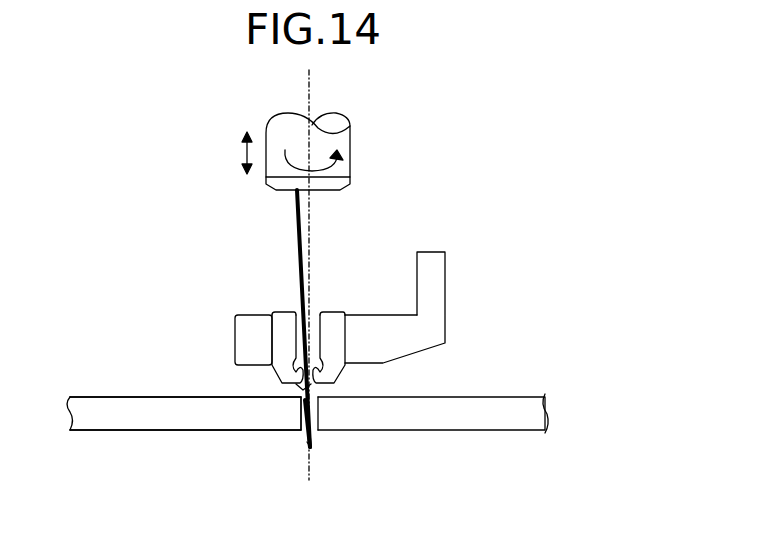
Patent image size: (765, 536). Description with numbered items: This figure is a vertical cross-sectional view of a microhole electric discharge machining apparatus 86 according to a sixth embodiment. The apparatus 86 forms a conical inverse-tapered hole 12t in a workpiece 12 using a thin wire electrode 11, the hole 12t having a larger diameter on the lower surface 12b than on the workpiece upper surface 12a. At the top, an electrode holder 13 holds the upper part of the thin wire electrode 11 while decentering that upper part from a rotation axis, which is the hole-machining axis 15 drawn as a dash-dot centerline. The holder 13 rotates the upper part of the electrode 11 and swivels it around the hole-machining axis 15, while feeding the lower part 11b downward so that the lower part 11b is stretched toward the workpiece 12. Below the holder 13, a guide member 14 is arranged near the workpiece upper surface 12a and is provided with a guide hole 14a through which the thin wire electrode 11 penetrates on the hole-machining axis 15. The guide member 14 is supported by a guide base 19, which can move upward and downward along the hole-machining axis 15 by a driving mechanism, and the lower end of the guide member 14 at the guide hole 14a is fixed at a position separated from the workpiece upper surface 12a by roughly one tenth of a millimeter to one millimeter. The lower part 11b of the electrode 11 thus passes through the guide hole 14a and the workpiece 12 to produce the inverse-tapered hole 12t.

The microhole electric discharge machining apparatus 86 is at (434, 148).
The electrode holder 13 is at (350, 150).
The thin wire electrode 11 is at (295, 252).
The lower part 11b is at (318, 433).
The guide base 19 is at (437, 290).
The guide member 14 is at (330, 340).
The guide hole 14a is at (297, 390).
The workpiece 12 is at (110, 414).
The workpiece upper surface 12a is at (128, 397).
The lower surface 12b is at (154, 431).
The conical inverse-tapered hole 12t is at (303, 432).
The hole-machining axis 15 is at (312, 456).